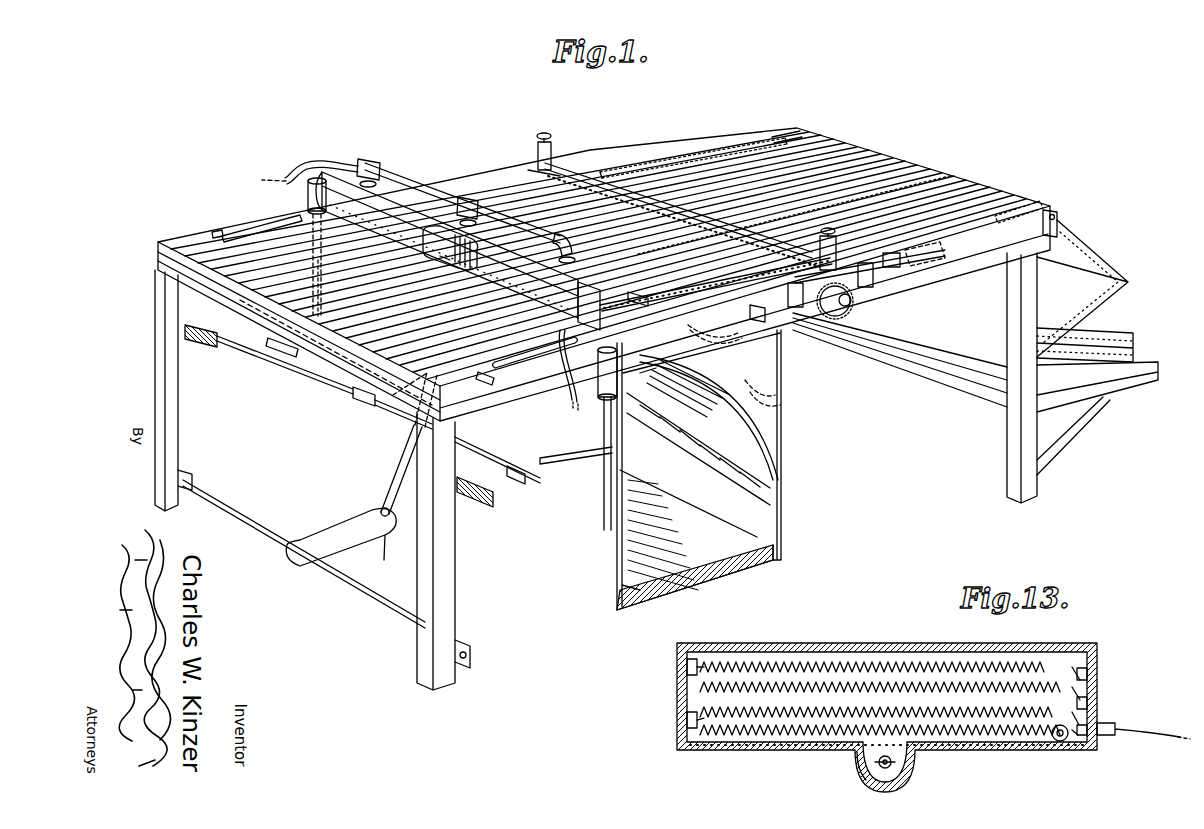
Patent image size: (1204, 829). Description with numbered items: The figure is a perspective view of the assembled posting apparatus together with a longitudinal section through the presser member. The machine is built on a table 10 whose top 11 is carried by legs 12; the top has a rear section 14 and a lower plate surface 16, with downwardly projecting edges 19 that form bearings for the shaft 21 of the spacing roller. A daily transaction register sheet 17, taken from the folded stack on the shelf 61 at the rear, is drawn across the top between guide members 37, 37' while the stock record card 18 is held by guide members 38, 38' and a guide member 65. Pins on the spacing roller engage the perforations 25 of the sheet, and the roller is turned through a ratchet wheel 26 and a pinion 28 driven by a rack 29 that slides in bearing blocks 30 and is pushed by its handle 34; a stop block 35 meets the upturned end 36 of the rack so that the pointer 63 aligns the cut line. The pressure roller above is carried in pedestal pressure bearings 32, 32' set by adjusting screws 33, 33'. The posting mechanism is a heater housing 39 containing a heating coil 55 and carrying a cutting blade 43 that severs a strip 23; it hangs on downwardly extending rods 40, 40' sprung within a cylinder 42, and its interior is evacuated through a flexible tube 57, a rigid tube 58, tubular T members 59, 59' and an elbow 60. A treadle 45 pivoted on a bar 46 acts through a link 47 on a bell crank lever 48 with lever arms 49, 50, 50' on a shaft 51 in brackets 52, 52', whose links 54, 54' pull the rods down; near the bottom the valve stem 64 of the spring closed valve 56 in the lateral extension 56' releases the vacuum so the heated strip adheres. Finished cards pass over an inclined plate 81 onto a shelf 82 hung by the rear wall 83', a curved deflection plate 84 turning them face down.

In FIG. 1, the table 10 is at (1002, 270).
In FIG. 1, the top 11 is at (740, 340).
In FIG. 1, the legs 12 is at (180, 440).
In FIG. 1, the rear section 14 is at (178, 238).
In FIG. 1, the upper plate surface 16 is at (352, 335).
In FIG. 1, the daily transaction register sheet 17 is at (918, 178).
In FIG. 1, the stock record card 18 is at (214, 230).
In FIG. 1, the downwardly projecting edges 19 is at (1036, 242).
In FIG. 1, the shaft 21 is at (853, 303).
In FIG. 1, the strip 23 is at (512, 370).
In FIG. 1, the perforations 25 is at (790, 128).
In FIG. 1, the ratchet wheel 26 is at (1012, 204).
In FIG. 1, the pinion 28 is at (840, 345).
In FIG. 1, the rack 29 is at (760, 330).
In FIG. 1, the bearing blocks 30 is at (875, 280).
In FIG. 1, the pedestal pressure bearing 32 is at (844, 234).
In FIG. 1, the pedestal pressure bearing 32' is at (528, 145).
In FIG. 1, the adjusting screw 33 is at (823, 214).
In FIG. 1, the adjusting screw 33' is at (553, 118).
In FIG. 1, the handle 34 is at (650, 374).
In FIG. 1, the stop block 35 is at (900, 262).
In FIG. 1, the upturned end 36 is at (940, 258).
In FIG. 1, the guide member 37 is at (766, 209).
In FIG. 1, the guide member 37' is at (693, 136).
In FIG. 1, the guide member 38 is at (485, 387).
In FIG. 1, the guide member 38' is at (262, 215).
In FIG. 1, the heater housing 39 is at (400, 205).
In FIG. 13, the heater housing 39 is at (808, 748).
In FIG. 1, the downwardly extending rod 40 is at (576, 380).
In FIG. 1, the downwardly extending rod 40' is at (287, 150).
In FIG. 1, the cylinder 42 is at (306, 200).
In FIG. 1, the cutting blade 43 is at (628, 280).
In FIG. 13, the cutting blade 43 is at (845, 648).
In FIG. 1, the treadle 45 is at (372, 548).
In FIG. 1, the bar 46 is at (370, 596).
In FIG. 1, the link 47 is at (383, 494).
In FIG. 1, the bell crank lever 48 is at (333, 390).
In FIG. 1, the lever arm 49 is at (391, 414).
In FIG. 1, the lever arm 50 is at (559, 472).
In FIG. 1, the lever arm 50' is at (278, 355).
In FIG. 1, the shaft 51 is at (478, 452).
In FIG. 1, the bracket 52 is at (486, 503).
In FIG. 1, the bracket 52' is at (204, 353).
In FIG. 1, the link 54 is at (581, 463).
In FIG. 1, the link 54' is at (336, 288).
In FIG. 13, the heating coil 55 is at (896, 665).
In FIG. 1, the spring closed valve 56 is at (423, 248).
In FIG. 1, the lateral extension 56' is at (430, 270).
In FIG. 13, the lateral extension 56' is at (847, 774).
In FIG. 1, the tube 57 is at (332, 160).
In FIG. 1, the rigid tube 58 is at (468, 182).
In FIG. 1, the tubular T member 59 is at (484, 183).
In FIG. 1, the tubular T member 59' is at (384, 158).
In FIG. 1, the elbow 60 is at (450, 257).
In FIG. 1, the shelf 61 is at (1130, 383).
In FIG. 1, the pointer 63 is at (680, 288).
In FIG. 13, the valve stem 64 is at (892, 766).
In FIG. 1, the guide member 65 is at (640, 290).
In FIG. 1, the inclined plate 81 is at (692, 388).
In FIG. 1, the shelf 82 is at (778, 550).
In FIG. 1, the rear wall 83' is at (695, 555).
In FIG. 1, the curved deflection plate 84 is at (775, 398).